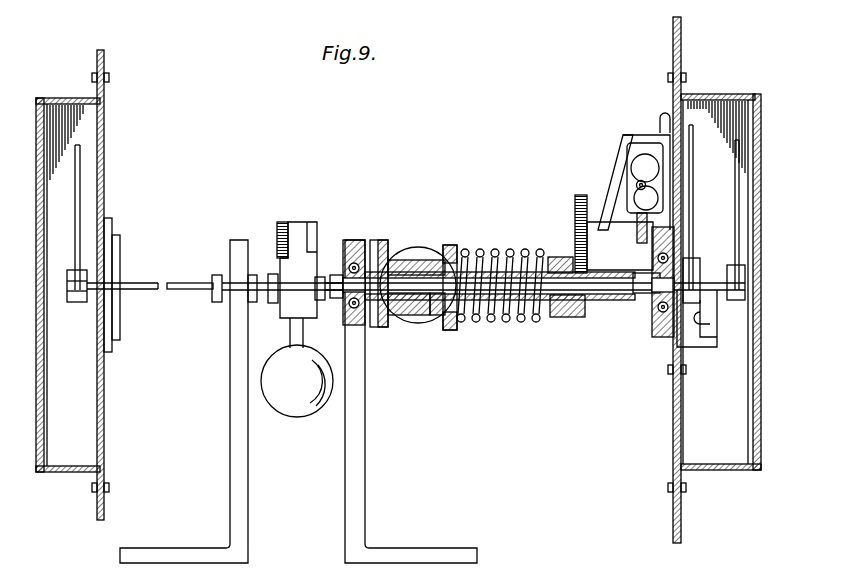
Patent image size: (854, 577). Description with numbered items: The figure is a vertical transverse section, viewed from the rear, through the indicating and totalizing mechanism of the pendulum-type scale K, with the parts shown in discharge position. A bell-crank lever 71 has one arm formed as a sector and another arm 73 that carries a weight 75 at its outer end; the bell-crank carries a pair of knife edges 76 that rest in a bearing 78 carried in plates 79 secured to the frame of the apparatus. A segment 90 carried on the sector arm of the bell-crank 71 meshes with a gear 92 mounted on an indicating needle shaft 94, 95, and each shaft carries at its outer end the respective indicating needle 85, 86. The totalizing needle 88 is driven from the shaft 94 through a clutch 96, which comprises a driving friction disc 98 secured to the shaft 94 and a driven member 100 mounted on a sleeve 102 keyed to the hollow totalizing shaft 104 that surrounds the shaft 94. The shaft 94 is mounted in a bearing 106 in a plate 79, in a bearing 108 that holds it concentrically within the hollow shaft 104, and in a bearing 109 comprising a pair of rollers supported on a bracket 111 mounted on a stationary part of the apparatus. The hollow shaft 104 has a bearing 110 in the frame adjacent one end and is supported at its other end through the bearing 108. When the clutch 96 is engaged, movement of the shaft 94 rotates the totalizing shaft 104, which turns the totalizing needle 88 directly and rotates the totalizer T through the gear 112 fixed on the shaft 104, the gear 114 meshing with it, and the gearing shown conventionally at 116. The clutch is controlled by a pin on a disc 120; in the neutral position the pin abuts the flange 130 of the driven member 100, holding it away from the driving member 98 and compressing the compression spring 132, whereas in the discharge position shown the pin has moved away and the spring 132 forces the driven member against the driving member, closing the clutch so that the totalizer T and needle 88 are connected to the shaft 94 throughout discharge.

The bell-crank lever 71 is at (276, 232).
The arm 73 is at (293, 335).
The weight 75 is at (290, 418).
The knife edges 76 is at (213, 292).
The bearing 78 is at (220, 277).
The plates 79 is at (238, 475).
The indicating needle 85 is at (740, 205).
The indicating needle 86 is at (78, 200).
The totalizing needle 88 is at (693, 233).
The segment 90 is at (287, 233).
The gear 92 is at (277, 302).
The indicating needle shaft 94 is at (505, 275).
The indicating needle shaft 95 is at (177, 287).
The clutch 96 is at (385, 238).
The friction disc 98 is at (368, 235).
The driven member 100 is at (383, 327).
The sleeve 102 is at (412, 313).
The hollow totalizing shaft 104 is at (610, 297).
The bearing 106 is at (342, 260).
The bearing 108 is at (433, 320).
The bearing 109 is at (702, 332).
The bearing 110 is at (648, 315).
The bracket 111 is at (717, 350).
The gear 112 is at (578, 320).
The gear 114 is at (573, 220).
The gearing 116 is at (620, 200).
The disc 120 is at (421, 247).
The flange 130 is at (445, 247).
The compression spring 132 is at (528, 318).
The scale K is at (277, 247).
The totalizer T is at (627, 170).